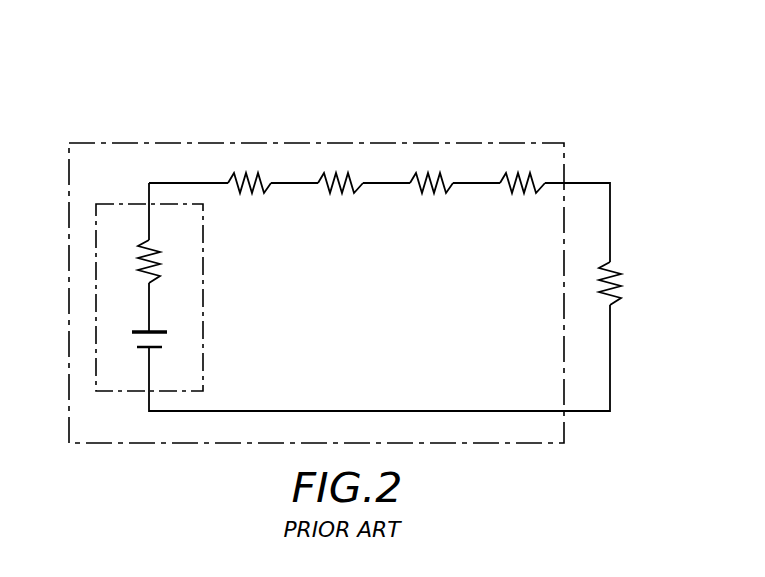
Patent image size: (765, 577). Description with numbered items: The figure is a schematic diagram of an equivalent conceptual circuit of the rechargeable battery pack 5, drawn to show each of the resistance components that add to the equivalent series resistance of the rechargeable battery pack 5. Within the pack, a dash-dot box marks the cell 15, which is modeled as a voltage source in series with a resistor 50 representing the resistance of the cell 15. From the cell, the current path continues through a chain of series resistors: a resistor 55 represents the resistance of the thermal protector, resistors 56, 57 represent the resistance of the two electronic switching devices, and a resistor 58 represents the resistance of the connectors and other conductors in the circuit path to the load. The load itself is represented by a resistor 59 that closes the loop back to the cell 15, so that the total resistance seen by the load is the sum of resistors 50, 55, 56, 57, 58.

The rechargeable battery pack 5 is at (318, 143).
The cell 15 is at (203, 228).
The resistor 50 is at (153, 258).
The resistor 55 is at (258, 193).
The resistor 56 is at (344, 193).
The resistor 57 is at (428, 193).
The resistor 58 is at (522, 190).
The resistor 59 is at (616, 286).